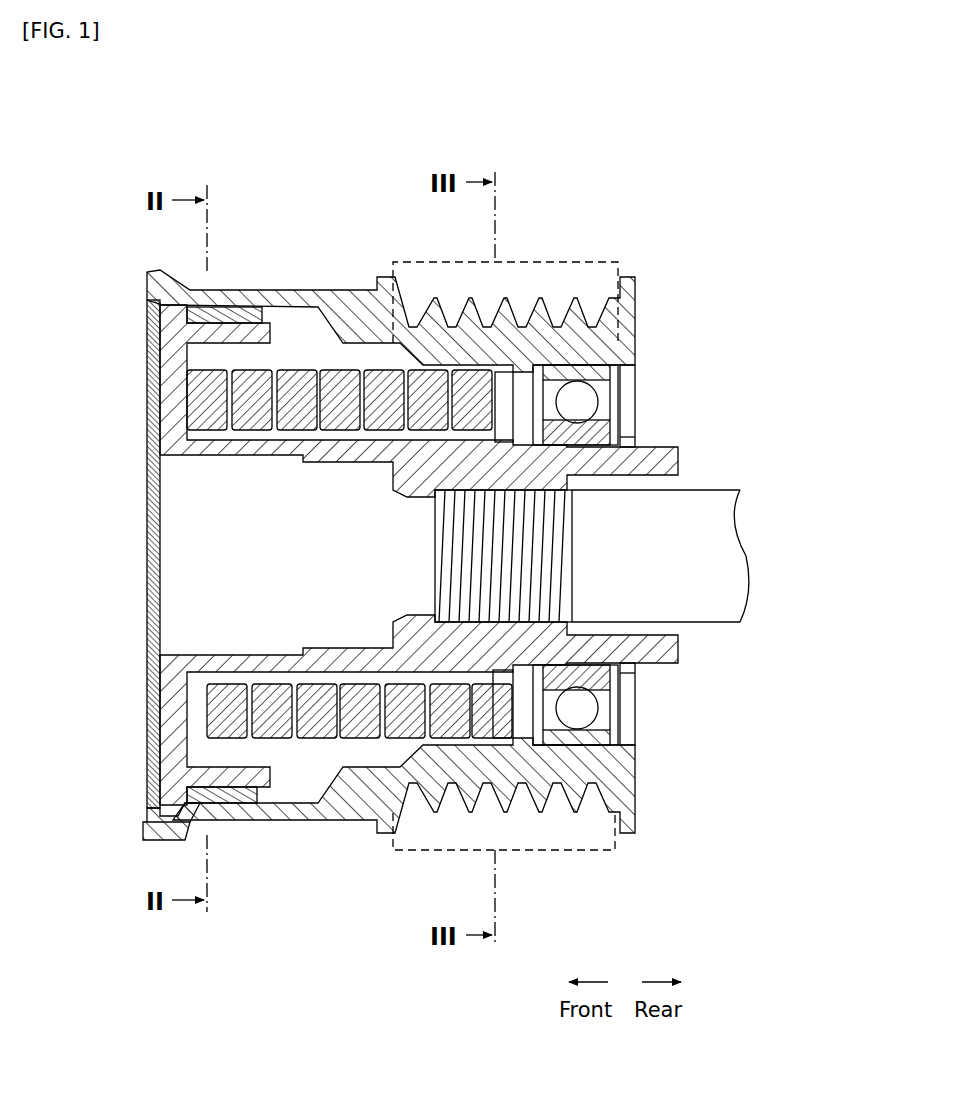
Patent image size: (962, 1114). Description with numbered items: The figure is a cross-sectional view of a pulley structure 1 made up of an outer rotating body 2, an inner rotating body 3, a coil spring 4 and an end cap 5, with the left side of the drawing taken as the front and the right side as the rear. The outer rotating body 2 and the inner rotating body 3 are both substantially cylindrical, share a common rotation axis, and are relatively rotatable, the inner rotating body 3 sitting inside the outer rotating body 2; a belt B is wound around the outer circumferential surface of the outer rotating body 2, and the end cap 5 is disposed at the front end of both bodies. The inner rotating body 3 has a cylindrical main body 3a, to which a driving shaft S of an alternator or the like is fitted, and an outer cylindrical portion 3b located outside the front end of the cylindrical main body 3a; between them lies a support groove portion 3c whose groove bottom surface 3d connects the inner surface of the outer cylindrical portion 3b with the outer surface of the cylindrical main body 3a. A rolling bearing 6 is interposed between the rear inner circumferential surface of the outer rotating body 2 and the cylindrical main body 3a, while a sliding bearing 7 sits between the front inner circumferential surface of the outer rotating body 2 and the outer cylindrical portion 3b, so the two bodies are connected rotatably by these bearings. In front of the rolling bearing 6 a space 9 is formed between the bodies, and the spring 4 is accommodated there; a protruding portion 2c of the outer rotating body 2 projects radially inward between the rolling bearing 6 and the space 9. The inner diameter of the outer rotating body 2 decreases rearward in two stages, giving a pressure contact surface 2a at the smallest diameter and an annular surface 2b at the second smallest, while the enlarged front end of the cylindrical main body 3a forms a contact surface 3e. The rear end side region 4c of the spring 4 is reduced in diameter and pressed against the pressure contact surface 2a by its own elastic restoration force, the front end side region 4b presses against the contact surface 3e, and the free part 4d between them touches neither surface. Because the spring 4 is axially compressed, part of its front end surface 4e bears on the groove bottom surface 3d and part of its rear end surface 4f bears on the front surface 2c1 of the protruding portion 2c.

The pulley structure 1 is at (730, 203).
The outer rotating body 2 is at (640, 323).
The pressure contact surface 2a is at (506, 345).
The annular surface 2b is at (398, 348).
The protruding portion 2c is at (622, 372).
The front surface of protruding portion 2c1 is at (623, 735).
The inner rotating body 3 is at (680, 465).
The cylindrical main body 3a is at (410, 500).
The outer cylindrical portion 3b is at (245, 330).
The support groove portion 3c is at (193, 350).
The groove bottom surface 3d is at (187, 397).
The contact surface 3e is at (218, 430).
The coil spring 4 is at (300, 430).
The front end side region 4b is at (250, 430).
The rear end side region 4c is at (372, 462).
The free part 4d is at (325, 305).
The front end surface 4e is at (187, 418).
The rear end surface 4f is at (540, 697).
The end cap 5 is at (147, 548).
The rolling bearing 6 is at (622, 437).
The sliding bearing 7 is at (250, 318).
The space 9 is at (297, 347).
The belt B is at (570, 262).
The driving shaft S is at (714, 612).